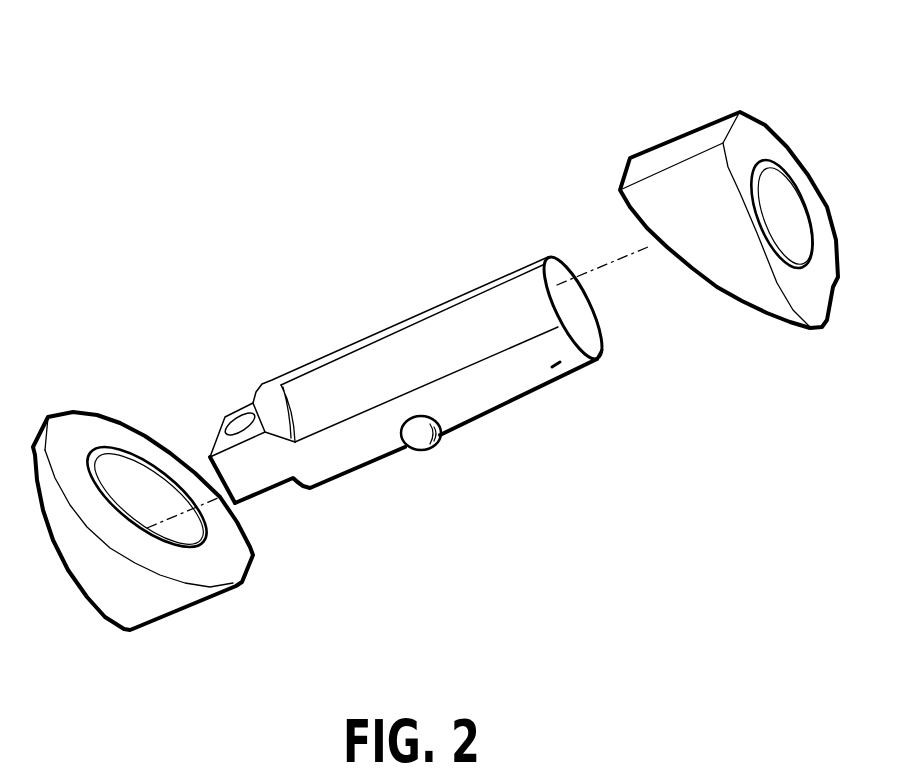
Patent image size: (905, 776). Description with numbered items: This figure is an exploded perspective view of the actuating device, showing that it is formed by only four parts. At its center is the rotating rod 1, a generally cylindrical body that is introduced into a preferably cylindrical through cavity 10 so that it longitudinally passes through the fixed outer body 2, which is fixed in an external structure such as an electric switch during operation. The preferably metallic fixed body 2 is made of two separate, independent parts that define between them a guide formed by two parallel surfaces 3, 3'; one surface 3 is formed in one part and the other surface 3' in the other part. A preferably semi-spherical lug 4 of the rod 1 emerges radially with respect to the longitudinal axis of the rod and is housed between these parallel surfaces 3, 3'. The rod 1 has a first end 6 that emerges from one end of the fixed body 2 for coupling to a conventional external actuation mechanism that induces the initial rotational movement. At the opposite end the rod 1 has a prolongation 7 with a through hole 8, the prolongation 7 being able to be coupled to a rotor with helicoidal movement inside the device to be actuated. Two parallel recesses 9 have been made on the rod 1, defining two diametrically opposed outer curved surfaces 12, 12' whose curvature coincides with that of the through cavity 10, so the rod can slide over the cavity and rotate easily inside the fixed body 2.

The rotating rod 1 is at (505, 387).
The fixed outer body 2 is at (103, 583).
The parallel surface 3 is at (157, 554).
The parallel surface 3' is at (766, 276).
The lug 4 is at (430, 453).
The first end 6 is at (593, 343).
The prolongation 7 is at (265, 480).
The through hole 8 is at (238, 427).
The parallel recess 9 is at (483, 307).
The through cavity 10 is at (127, 472).
The curved surface 12 is at (573, 245).
The curved surface 12' is at (590, 418).